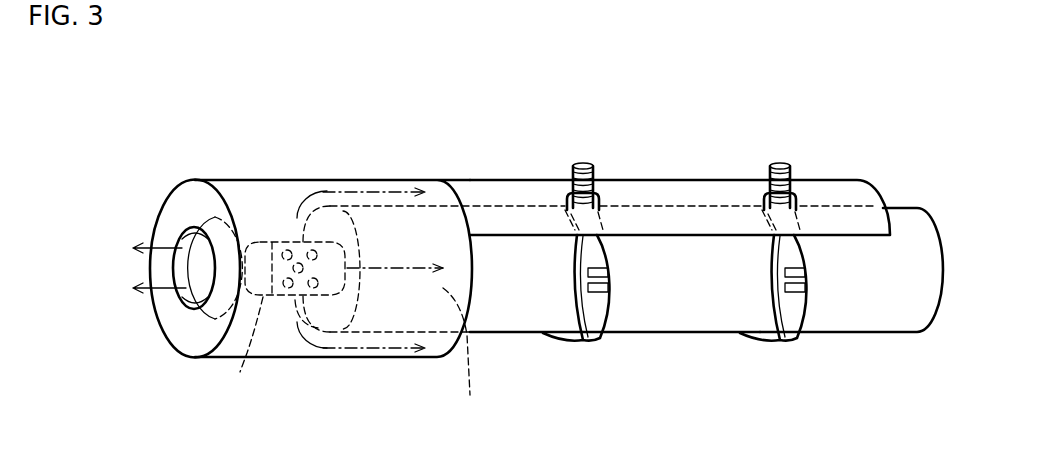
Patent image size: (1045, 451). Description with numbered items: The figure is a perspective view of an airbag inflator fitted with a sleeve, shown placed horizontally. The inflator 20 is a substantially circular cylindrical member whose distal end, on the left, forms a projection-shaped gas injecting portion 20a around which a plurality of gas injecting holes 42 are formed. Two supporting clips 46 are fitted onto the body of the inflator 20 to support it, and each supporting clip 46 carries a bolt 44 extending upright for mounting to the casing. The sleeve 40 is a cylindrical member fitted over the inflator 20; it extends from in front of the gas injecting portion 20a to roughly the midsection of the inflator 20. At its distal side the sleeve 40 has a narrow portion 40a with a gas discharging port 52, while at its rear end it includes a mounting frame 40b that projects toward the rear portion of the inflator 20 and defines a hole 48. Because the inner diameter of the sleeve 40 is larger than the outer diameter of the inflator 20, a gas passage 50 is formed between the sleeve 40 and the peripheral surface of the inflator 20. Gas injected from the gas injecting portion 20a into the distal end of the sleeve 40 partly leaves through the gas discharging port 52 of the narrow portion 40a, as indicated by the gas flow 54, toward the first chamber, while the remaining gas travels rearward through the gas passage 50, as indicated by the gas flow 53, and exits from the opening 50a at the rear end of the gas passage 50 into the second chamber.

The inflator 20 is at (898, 315).
The gas injecting portion 20a is at (247, 356).
The sleeve 40 is at (274, 192).
The narrow portion 40a is at (181, 203).
The mounting frame 40b is at (490, 192).
The gas injecting holes 42 is at (303, 298).
The bolt 44 is at (576, 164).
The supporting clips 46 is at (580, 336).
The hole 48 is at (597, 182).
The gas passage 50 is at (391, 338).
The opening 50a is at (473, 358).
The gas discharging port 52 is at (185, 232).
The gas flow 53 is at (398, 268).
The gas flow 54 is at (178, 301).